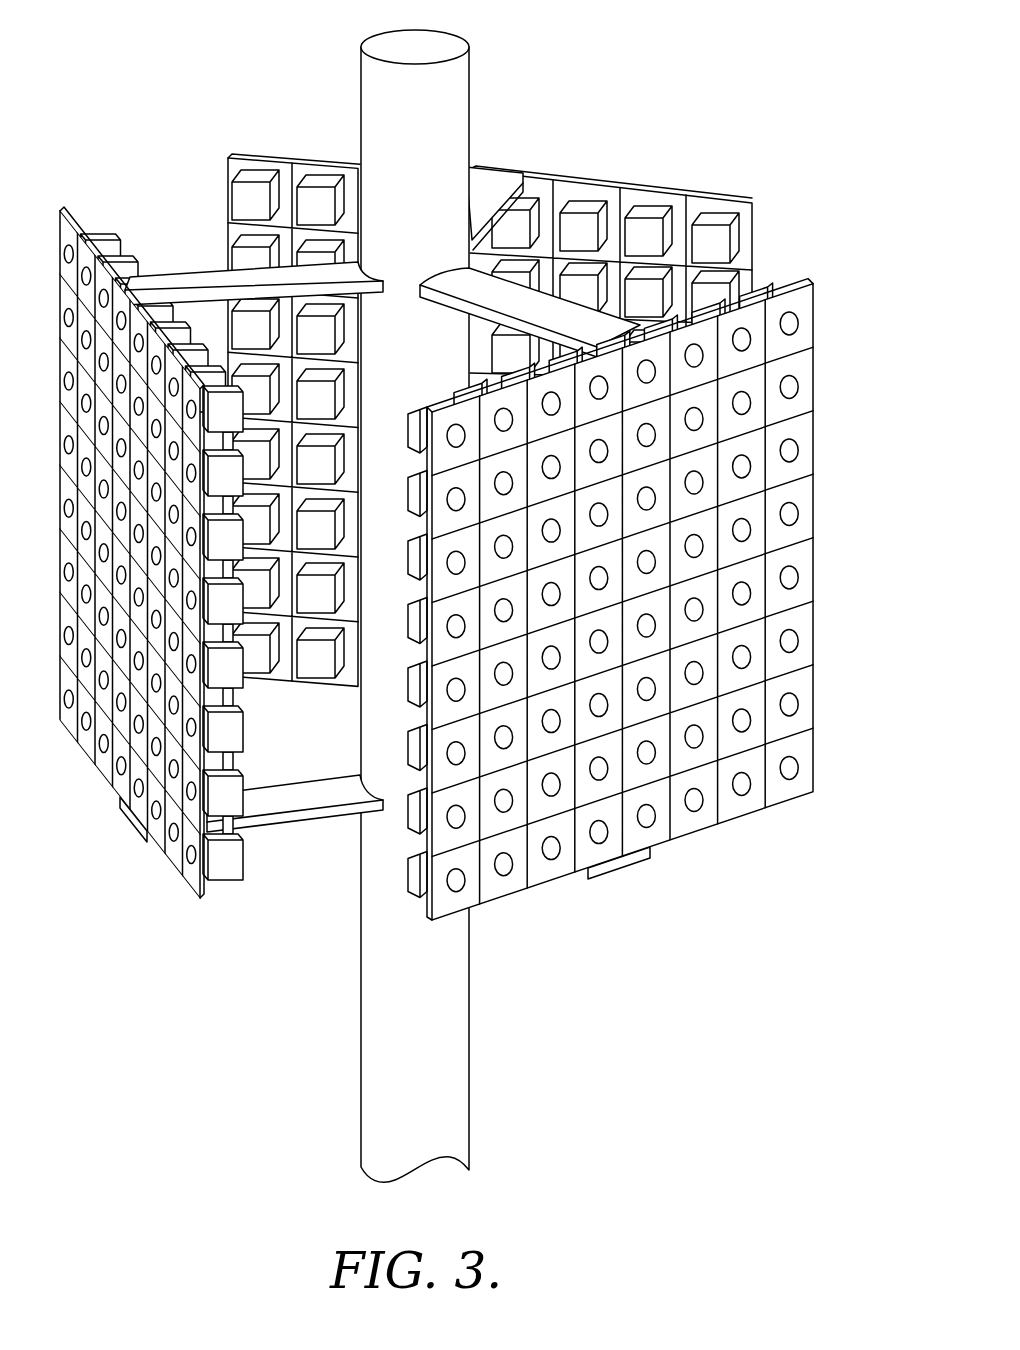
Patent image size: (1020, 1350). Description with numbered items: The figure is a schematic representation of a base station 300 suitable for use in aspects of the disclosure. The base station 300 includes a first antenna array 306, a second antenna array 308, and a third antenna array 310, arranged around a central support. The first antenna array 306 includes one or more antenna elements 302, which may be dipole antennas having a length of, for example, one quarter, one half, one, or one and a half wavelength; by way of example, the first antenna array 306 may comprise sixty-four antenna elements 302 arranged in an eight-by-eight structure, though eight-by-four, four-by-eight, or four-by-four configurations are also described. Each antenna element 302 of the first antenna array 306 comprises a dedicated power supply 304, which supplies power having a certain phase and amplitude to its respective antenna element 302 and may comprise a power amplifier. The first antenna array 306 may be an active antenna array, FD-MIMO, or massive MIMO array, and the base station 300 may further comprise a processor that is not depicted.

The base station 300 is at (461, 594).
The antenna element 302 is at (438, 459).
The power supply 304 is at (415, 428).
The first antenna array 306 is at (589, 622).
The second antenna array 308 is at (148, 843).
The third antenna array 310 is at (654, 168).